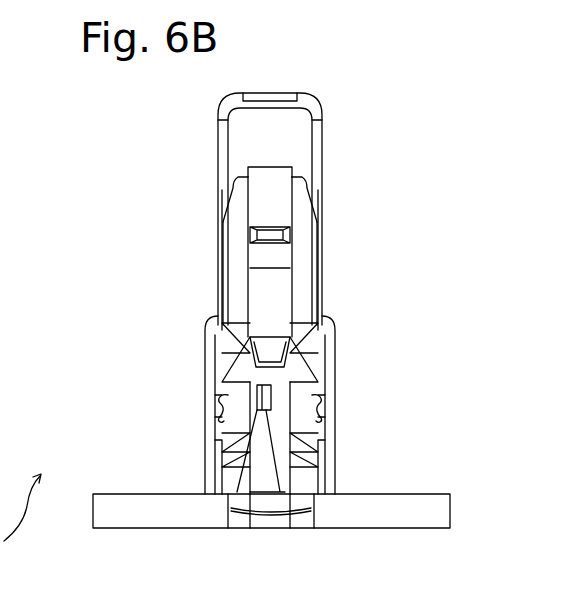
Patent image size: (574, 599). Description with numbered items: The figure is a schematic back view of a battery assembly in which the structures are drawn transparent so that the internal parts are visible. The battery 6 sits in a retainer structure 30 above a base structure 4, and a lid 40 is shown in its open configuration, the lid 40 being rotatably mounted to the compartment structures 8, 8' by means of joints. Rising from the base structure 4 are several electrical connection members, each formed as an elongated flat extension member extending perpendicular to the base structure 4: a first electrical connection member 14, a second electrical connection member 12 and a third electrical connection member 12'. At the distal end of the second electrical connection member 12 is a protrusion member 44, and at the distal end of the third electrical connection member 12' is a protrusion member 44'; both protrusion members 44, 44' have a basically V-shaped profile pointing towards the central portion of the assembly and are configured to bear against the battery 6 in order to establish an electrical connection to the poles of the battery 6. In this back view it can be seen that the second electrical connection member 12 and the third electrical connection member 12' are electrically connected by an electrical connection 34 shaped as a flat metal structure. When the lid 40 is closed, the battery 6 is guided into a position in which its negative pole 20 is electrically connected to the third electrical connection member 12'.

The lid 40 is at (258, 93).
The retainer structure 30 is at (203, 262).
The negative pole 20 is at (314, 252).
The battery 6 is at (286, 284).
The first electrical connection member 14 is at (274, 392).
The protrusion member 44 is at (178, 411).
The protrusion member 44' is at (366, 400).
The second electrical connection member 12 is at (174, 397).
The third electrical connection member 12' is at (369, 416).
The compartment structure 8 is at (183, 463).
The compartment structure 8' is at (363, 464).
The base structure 4 is at (113, 494).
The electrical connection 34 is at (269, 512).